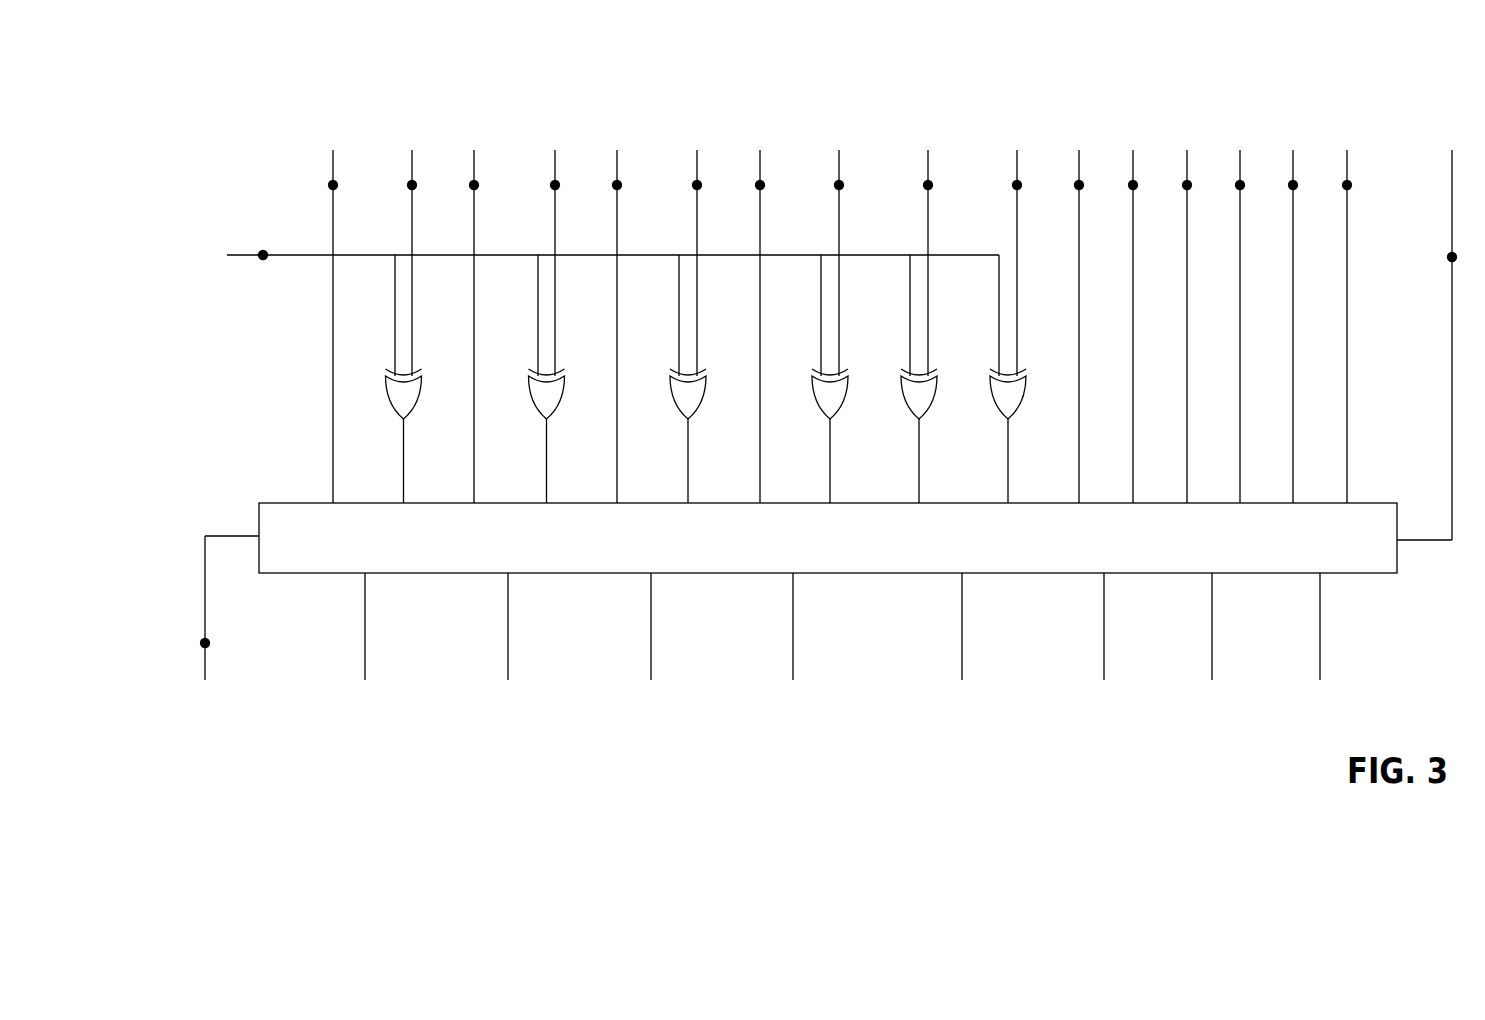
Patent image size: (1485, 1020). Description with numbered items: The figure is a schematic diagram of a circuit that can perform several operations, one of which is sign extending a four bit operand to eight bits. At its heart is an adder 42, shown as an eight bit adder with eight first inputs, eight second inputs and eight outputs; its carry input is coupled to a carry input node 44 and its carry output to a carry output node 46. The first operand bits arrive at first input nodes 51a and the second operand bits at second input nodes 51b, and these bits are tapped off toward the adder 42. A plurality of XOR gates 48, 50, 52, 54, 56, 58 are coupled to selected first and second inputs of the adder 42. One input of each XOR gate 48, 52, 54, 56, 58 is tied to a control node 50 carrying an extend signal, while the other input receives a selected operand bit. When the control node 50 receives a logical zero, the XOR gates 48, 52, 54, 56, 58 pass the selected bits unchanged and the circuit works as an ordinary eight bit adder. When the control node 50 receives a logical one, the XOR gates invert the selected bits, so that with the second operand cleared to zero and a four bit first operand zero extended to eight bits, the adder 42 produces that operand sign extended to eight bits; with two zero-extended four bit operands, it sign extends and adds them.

The adder 42 is at (883, 549).
The carry input node 44 is at (1460, 261).
The carry output node 46 is at (212, 640).
The XOR gate 48 is at (1018, 411).
The control node 50 is at (266, 261).
The XOR gate 52 is at (840, 411).
The XOR gate 54 is at (698, 411).
The XOR gate 56 is at (556, 411).
The XOR gate 58 is at (413, 411).
The first input nodes 51a is at (421, 187).
The second input nodes 51b is at (342, 187).